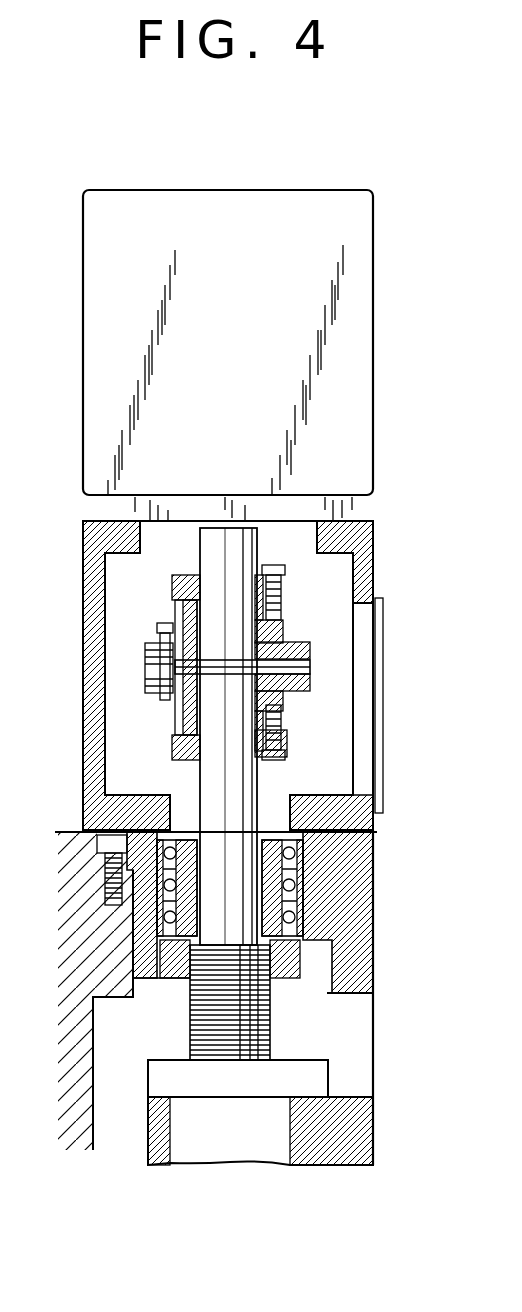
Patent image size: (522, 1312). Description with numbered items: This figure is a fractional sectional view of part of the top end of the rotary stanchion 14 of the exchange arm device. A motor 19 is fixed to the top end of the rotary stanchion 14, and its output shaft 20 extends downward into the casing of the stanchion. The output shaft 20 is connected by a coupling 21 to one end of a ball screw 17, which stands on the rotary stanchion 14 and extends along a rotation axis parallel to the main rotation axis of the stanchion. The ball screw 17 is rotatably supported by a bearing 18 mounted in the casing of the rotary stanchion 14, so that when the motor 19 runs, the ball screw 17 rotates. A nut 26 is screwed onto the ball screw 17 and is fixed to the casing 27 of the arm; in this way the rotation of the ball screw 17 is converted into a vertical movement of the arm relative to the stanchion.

The rotary stanchion 14 is at (357, 820).
The ball screw 17 is at (270, 1027).
The bearing 18 is at (146, 904).
The motor 19 is at (342, 344).
The output shaft 20 is at (242, 548).
The coupling 21 is at (317, 686).
The nut 26 is at (185, 1070).
The casing 27 is at (347, 1127).